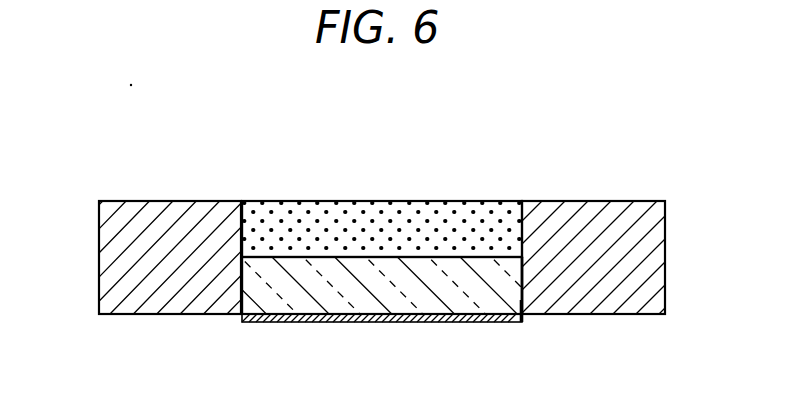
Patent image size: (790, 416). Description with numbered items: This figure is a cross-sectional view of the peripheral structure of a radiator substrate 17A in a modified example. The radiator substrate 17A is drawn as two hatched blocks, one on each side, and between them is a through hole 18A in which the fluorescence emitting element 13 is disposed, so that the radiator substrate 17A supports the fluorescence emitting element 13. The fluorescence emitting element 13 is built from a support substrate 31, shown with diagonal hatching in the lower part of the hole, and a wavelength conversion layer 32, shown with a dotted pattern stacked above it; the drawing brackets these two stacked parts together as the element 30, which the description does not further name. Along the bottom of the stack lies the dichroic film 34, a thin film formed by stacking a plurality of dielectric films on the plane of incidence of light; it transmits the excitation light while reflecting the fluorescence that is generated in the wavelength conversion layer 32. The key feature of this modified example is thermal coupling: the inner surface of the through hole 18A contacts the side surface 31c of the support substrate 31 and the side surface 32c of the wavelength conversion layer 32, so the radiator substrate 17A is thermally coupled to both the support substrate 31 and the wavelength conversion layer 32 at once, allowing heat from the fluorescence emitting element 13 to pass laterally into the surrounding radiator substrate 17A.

The fluorescence emitting element 13 is at (614, 131).
The radiator substrate 17A is at (647, 242).
The light-emitting element unit 30 is at (519, 92).
The support substrate 31 is at (433, 282).
The side surface of the support substrate 31c is at (242, 290).
The wavelength conversion layer 32 is at (428, 216).
The side surface of the wavelength conversion layer 32c is at (241, 233).
The dichroic film 34 is at (242, 317).
The through hole 18A is at (522, 302).